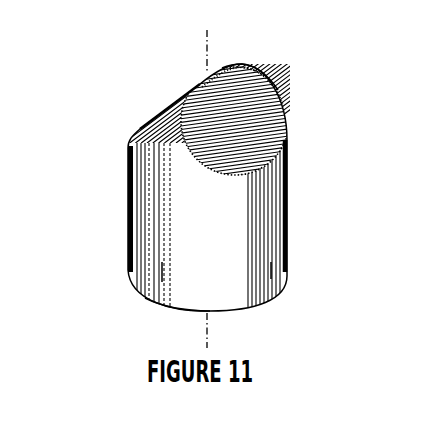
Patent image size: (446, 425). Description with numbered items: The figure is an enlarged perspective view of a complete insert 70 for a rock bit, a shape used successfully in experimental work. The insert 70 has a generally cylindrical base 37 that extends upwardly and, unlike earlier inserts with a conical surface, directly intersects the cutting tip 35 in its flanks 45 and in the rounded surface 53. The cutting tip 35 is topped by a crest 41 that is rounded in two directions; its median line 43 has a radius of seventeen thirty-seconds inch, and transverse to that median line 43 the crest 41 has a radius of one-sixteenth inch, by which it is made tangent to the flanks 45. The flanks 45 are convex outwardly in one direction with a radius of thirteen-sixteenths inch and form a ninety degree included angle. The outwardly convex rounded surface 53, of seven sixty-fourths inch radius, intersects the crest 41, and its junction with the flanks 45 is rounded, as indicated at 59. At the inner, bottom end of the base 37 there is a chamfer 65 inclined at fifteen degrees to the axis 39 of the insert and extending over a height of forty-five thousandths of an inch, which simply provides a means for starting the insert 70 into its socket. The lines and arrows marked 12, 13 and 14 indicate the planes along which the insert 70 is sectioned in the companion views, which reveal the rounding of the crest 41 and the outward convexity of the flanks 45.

The insert 70 is at (128, 48).
The axis of the insert 39 is at (205, 37).
The crest 41 is at (218, 60).
The median line of the crest 43 is at (256, 55).
The cutting tip 35 is at (181, 98).
The rounded intersection 59 is at (181, 121).
The rounded surface 53 is at (152, 128).
The section line 14- 14 is at (162, 141).
The flanks 45 is at (260, 135).
The section line 12- 12 is at (287, 202).
The section line 13- 13 is at (125, 220).
The base 37 is at (125, 229).
The chamfer 65 is at (167, 308).